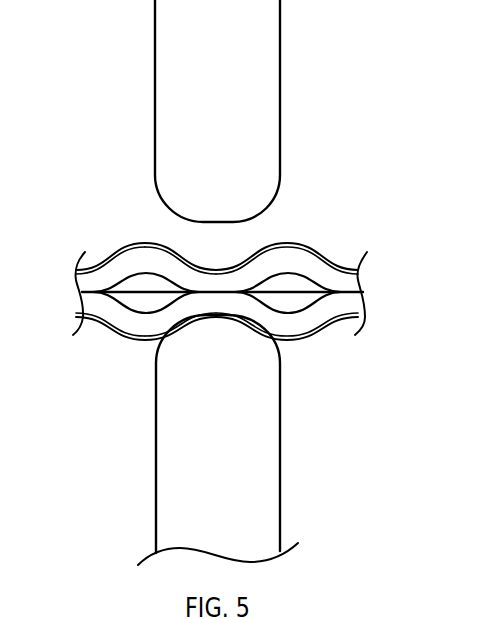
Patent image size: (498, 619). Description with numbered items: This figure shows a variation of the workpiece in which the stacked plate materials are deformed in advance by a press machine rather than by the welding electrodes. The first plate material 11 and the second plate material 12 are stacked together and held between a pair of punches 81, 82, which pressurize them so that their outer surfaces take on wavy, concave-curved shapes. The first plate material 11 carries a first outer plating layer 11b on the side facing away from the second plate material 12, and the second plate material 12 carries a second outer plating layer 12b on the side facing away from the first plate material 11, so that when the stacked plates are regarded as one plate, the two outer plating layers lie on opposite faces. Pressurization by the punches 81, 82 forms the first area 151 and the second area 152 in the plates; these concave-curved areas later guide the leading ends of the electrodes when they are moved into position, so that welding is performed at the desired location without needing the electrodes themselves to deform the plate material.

The punch 82 is at (173, 50).
The punch 81 is at (180, 493).
The second plate material 12 is at (147, 255).
The second outer plating layer 12b is at (316, 265).
The second area 152 is at (197, 263).
The first plate material 11 is at (150, 328).
The first outer plating layer 11b is at (322, 327).
The first area 151 is at (223, 317).